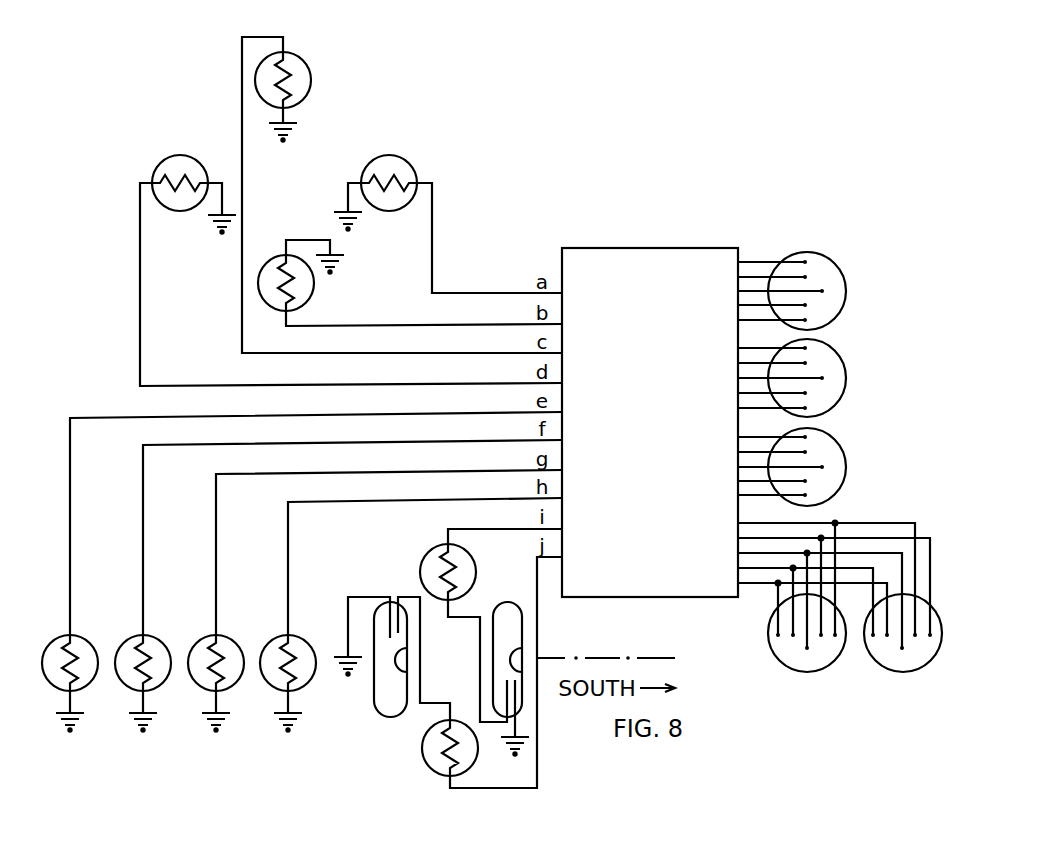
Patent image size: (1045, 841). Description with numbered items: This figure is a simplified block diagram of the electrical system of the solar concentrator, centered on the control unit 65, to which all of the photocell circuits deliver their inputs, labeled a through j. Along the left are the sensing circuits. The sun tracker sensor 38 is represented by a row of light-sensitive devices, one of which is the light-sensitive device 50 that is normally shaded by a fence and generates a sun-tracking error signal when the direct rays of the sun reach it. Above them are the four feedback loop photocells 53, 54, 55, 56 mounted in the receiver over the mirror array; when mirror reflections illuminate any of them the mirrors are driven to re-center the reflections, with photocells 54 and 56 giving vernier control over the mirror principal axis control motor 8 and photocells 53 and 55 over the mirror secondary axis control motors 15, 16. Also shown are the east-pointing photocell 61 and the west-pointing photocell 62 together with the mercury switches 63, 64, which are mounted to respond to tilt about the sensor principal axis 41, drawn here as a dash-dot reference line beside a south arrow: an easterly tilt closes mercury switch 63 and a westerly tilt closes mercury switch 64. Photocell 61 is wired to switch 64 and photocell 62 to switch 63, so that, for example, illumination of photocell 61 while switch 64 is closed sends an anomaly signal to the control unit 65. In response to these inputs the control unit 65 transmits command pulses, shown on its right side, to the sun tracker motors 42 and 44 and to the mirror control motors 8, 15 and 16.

The mirror principal axis control motor 8 is at (810, 291).
The mirror secondary axis control motor 15 is at (807, 646).
The mirror secondary axis control motor 16 is at (903, 646).
The sun tracker sensor 38 is at (183, 741).
The sensor principal axis 41 is at (620, 658).
The sun tracker motor 42 is at (808, 378).
The sun tracker motor 44 is at (846, 467).
The light-sensitive device 50 is at (236, 643).
The light-sensitive device 53 is at (180, 171).
The light-sensitive device 54 is at (299, 97).
The light-sensitive device 55 is at (389, 171).
The light-sensitive device 56 is at (297, 290).
The photocell 61 is at (462, 572).
The photocell 62 is at (433, 748).
The mercury switch 63 is at (375, 666).
The mercury switch 64 is at (522, 627).
The control unit 65 is at (670, 600).